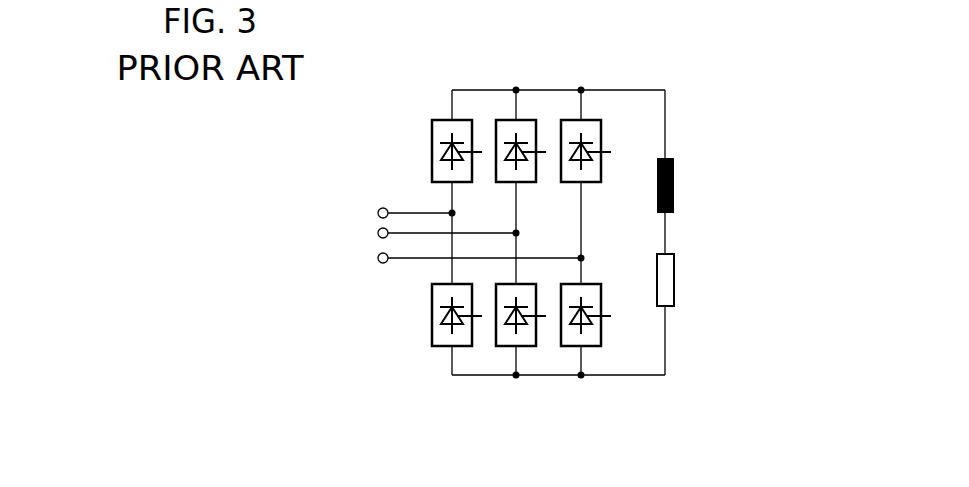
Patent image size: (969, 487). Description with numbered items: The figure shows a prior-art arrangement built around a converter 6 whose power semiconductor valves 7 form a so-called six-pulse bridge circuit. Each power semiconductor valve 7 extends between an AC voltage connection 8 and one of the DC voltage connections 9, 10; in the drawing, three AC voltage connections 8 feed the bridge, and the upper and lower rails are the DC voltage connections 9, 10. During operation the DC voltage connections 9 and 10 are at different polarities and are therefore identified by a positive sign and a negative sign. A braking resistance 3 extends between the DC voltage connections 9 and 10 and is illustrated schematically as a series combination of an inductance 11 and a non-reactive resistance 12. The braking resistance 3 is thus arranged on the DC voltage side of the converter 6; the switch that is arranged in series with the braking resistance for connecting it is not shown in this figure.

The braking resistance 3 is at (767, 207).
The converter 6 is at (345, 176).
The power semiconductor valve 7 is at (432, 152).
The AC voltage connection 8 is at (452, 213).
The DC voltage connection 9 is at (546, 90).
The DC voltage connection 10 is at (545, 377).
The inductance 11 is at (675, 188).
The non-reactive resistance 12 is at (675, 284).